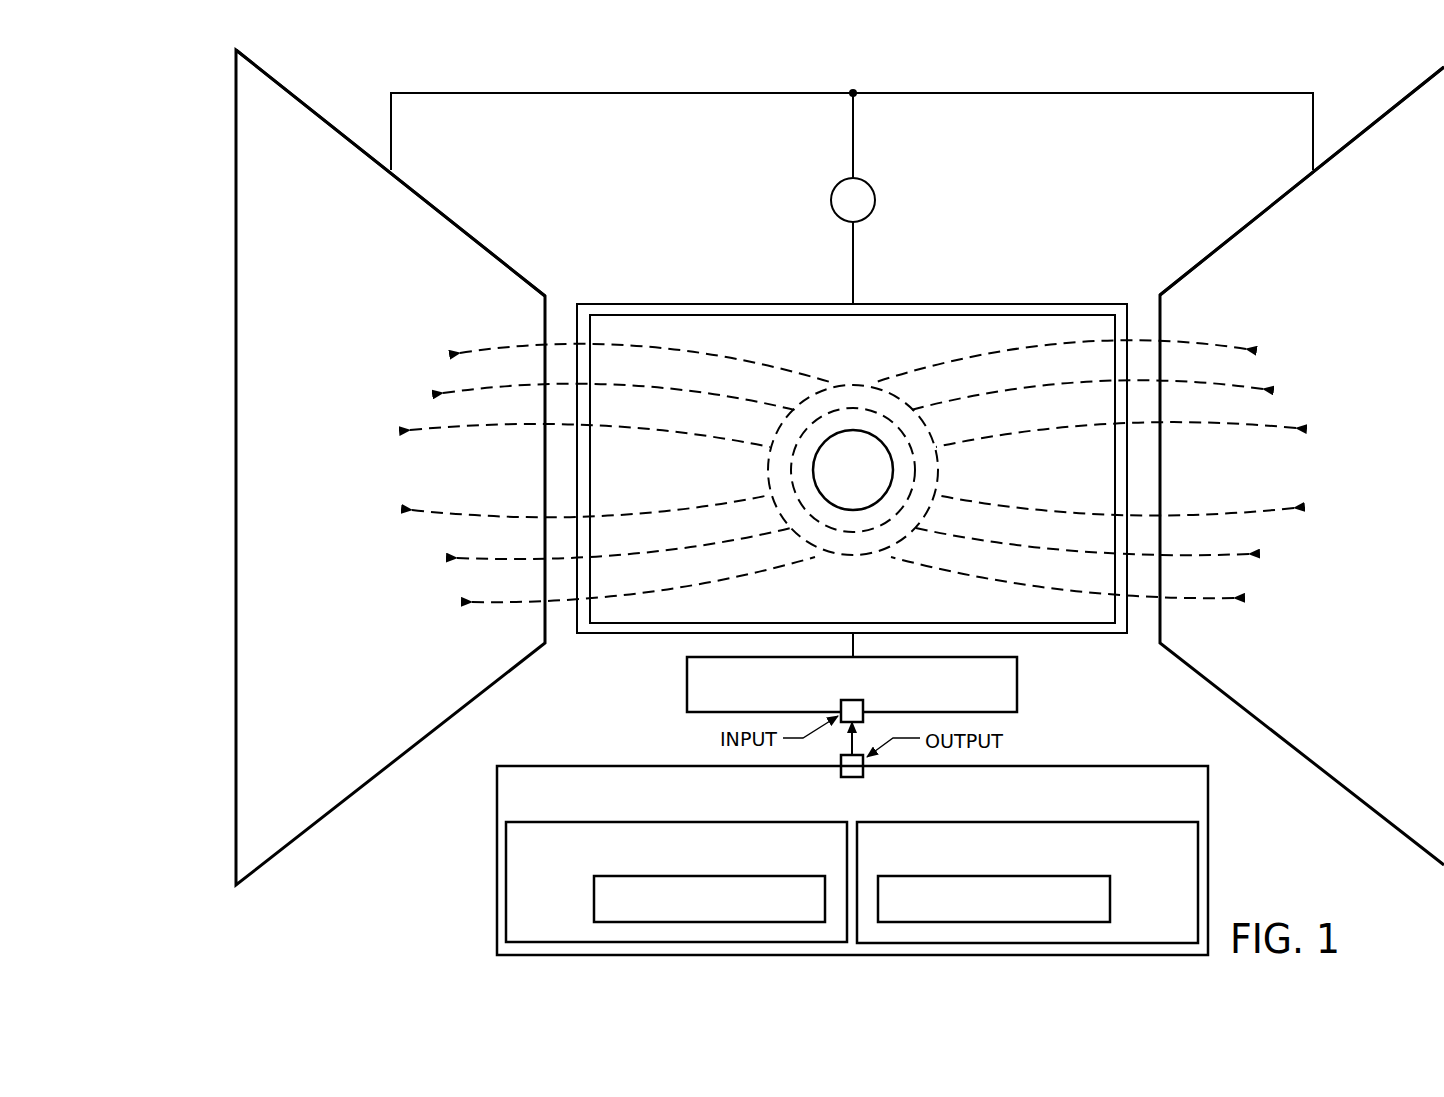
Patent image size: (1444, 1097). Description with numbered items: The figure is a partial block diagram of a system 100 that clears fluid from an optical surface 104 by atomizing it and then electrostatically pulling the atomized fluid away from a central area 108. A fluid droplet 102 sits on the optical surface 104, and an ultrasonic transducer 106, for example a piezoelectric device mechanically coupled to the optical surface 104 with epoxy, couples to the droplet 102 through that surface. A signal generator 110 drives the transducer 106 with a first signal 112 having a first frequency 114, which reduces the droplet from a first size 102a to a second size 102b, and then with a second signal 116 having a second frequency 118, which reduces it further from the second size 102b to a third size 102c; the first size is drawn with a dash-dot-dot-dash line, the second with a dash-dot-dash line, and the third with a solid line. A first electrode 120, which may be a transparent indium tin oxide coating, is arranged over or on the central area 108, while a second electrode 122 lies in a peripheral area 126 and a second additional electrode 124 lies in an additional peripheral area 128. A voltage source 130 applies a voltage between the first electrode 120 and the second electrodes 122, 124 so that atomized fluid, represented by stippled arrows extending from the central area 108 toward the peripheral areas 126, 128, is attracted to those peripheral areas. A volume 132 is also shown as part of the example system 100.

The system 100 is at (172, 318).
The droplet 102 is at (853, 474).
The first droplet size 102a is at (838, 382).
The second droplet size 102b is at (870, 535).
The third droplet size 102c is at (881, 484).
The optical surface 104 is at (682, 303).
The ultrasonic transducer 106 is at (1018, 684).
The central area 108 is at (781, 338).
The signal generator 110 is at (496, 861).
The first signal 112 is at (758, 860).
The first frequency 114 is at (594, 895).
The second signal 116 is at (1123, 860).
The second frequency 118 is at (1110, 895).
The first electrode 120 is at (688, 483).
The second electrode 122 is at (339, 483).
The second additional electrode 124 is at (1407, 483).
The peripheral area 126 is at (496, 288).
The additional peripheral area 128 is at (1208, 288).
The voltage source 130 is at (876, 205).
The volume 132 is at (565, 303).